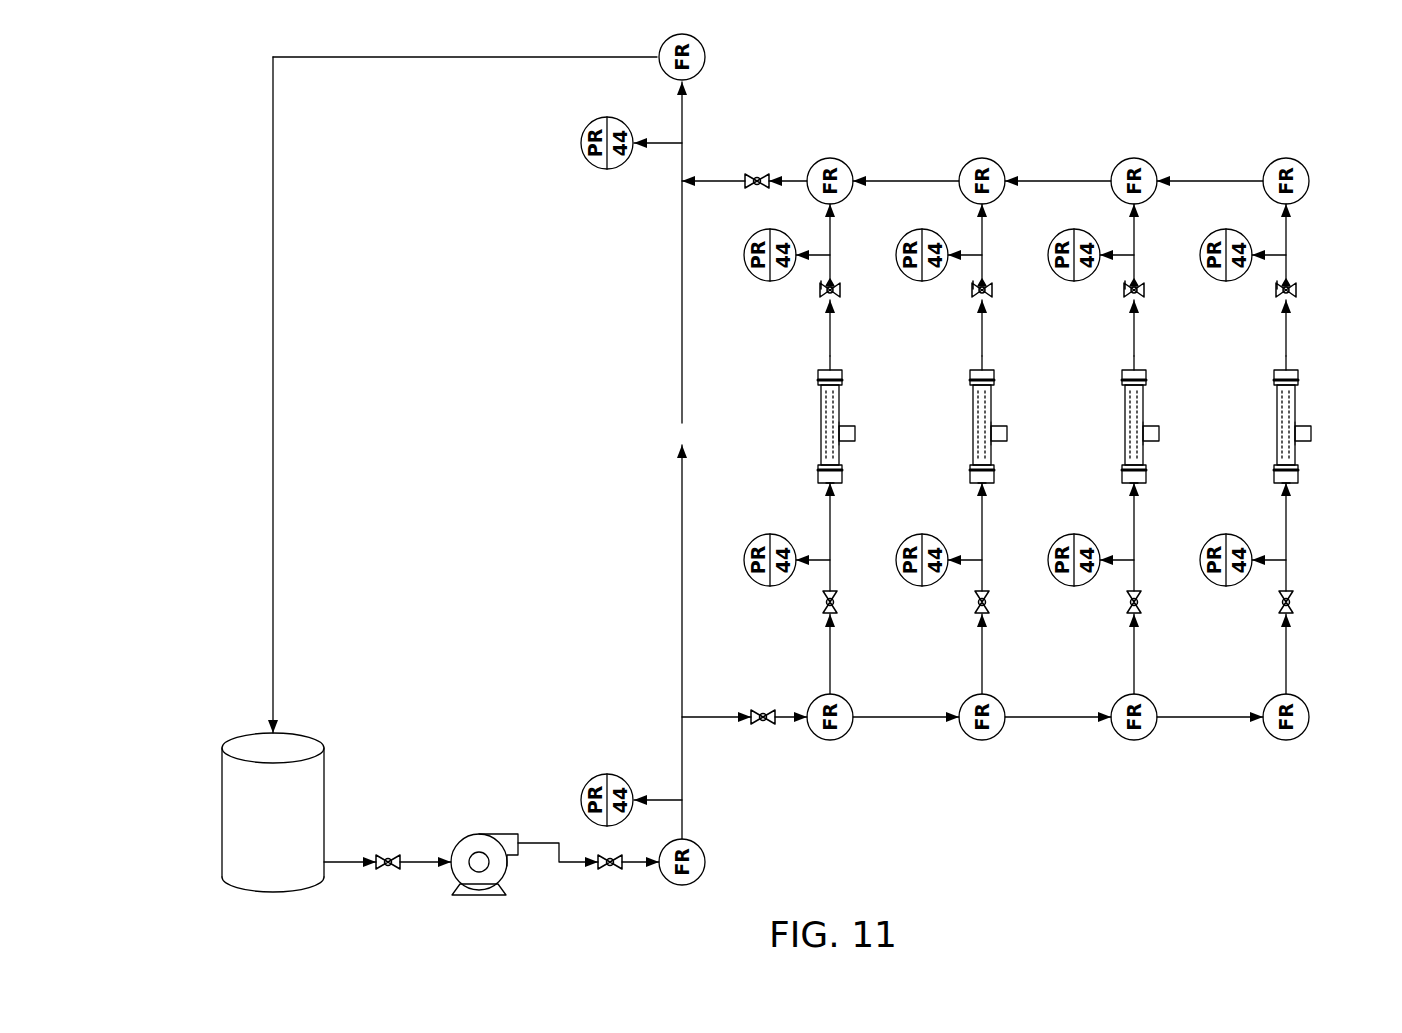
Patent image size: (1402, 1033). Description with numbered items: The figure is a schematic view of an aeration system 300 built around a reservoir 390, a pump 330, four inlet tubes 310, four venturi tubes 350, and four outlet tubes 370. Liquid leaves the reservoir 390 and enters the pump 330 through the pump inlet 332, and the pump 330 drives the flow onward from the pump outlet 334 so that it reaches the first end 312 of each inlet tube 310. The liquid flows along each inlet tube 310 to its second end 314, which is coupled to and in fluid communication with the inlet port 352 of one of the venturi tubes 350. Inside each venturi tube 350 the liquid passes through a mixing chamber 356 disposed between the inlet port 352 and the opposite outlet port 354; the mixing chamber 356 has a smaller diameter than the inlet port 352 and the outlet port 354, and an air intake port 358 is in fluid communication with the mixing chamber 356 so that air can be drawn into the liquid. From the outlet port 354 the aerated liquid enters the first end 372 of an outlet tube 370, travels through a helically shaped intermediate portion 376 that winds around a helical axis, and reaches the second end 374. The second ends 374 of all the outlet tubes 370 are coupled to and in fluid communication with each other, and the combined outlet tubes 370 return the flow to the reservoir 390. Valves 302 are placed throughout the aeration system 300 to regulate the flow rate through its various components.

The aeration system 300 is at (1204, 108).
The valves 302 is at (385, 868).
The inlet tubes 310 is at (1280, 660).
The first end 312 is at (827, 694).
The second end 314 is at (826, 483).
The pump 330 is at (478, 827).
The pump inlet 332 is at (452, 858).
The pump outlet 334 is at (520, 838).
The venturi tubes 350 is at (1045, 407).
The inlet port 352 is at (819, 477).
The outlet port 354 is at (842, 372).
The mixing chamber 356 is at (822, 427).
The air intake port 358 is at (858, 430).
The outlet tubes 370 is at (826, 318).
The first end 372 is at (820, 371).
The second end 374 is at (838, 204).
The intermediate portion 376 is at (831, 276).
The reservoir 390 is at (218, 810).